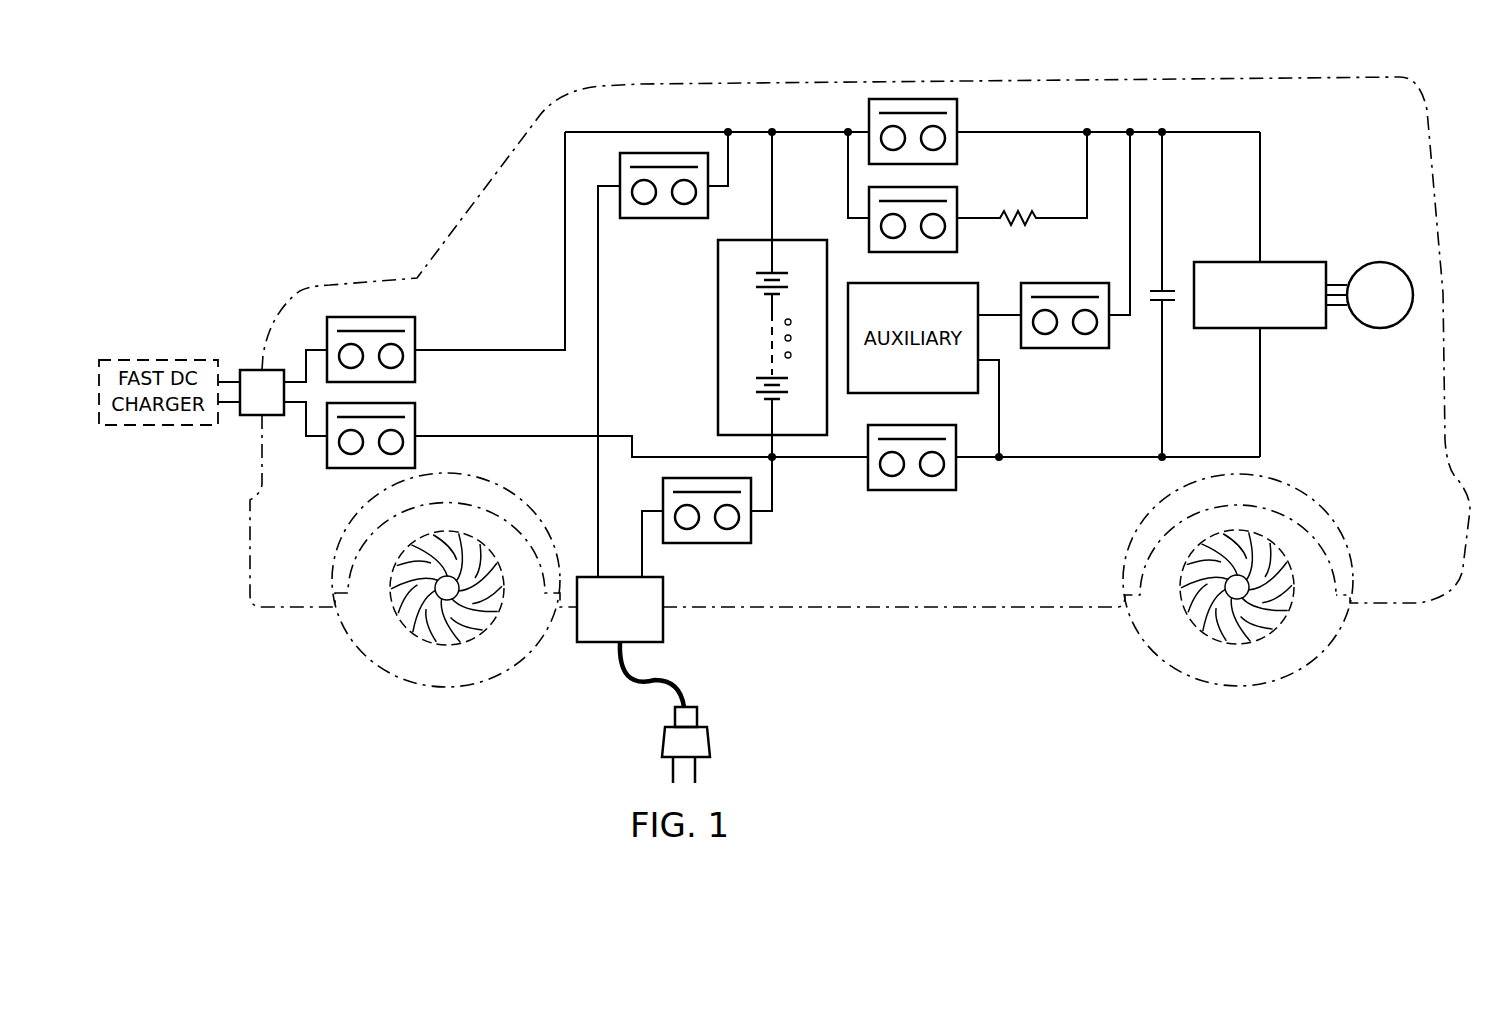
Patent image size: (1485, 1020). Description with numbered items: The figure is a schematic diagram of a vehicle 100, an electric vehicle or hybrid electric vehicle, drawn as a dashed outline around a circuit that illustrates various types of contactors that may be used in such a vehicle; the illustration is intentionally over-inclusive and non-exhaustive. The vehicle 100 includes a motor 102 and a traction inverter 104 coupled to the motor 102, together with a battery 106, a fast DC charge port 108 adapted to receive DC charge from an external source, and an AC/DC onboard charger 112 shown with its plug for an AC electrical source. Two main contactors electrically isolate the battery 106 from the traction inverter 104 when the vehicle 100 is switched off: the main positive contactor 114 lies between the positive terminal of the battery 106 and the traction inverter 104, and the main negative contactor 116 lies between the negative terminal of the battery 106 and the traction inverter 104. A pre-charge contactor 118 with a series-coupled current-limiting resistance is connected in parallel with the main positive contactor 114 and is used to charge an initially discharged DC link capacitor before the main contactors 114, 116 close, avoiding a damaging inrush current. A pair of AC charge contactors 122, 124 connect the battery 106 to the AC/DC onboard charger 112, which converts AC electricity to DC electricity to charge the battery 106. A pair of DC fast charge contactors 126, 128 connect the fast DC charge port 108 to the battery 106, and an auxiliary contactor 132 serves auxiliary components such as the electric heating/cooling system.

The vehicle 100 is at (418, 88).
The motor 102 is at (1380, 262).
The traction inverter 104 is at (1283, 262).
The battery 106 is at (718, 338).
The fast DC charge port 108 is at (252, 370).
The AC/DC onboard charger 112 is at (664, 627).
The main positive contactor 114 is at (957, 120).
The main negative contactor 116 is at (912, 491).
The pre-charge contactor 118 is at (957, 208).
The AC charge contactor 122 is at (663, 219).
The AC charge contactor 124 is at (752, 523).
The DC fast charge contactor 126 is at (416, 338).
The DC fast charge contactor 128 is at (416, 425).
The auxiliary contactor 132 is at (1065, 350).